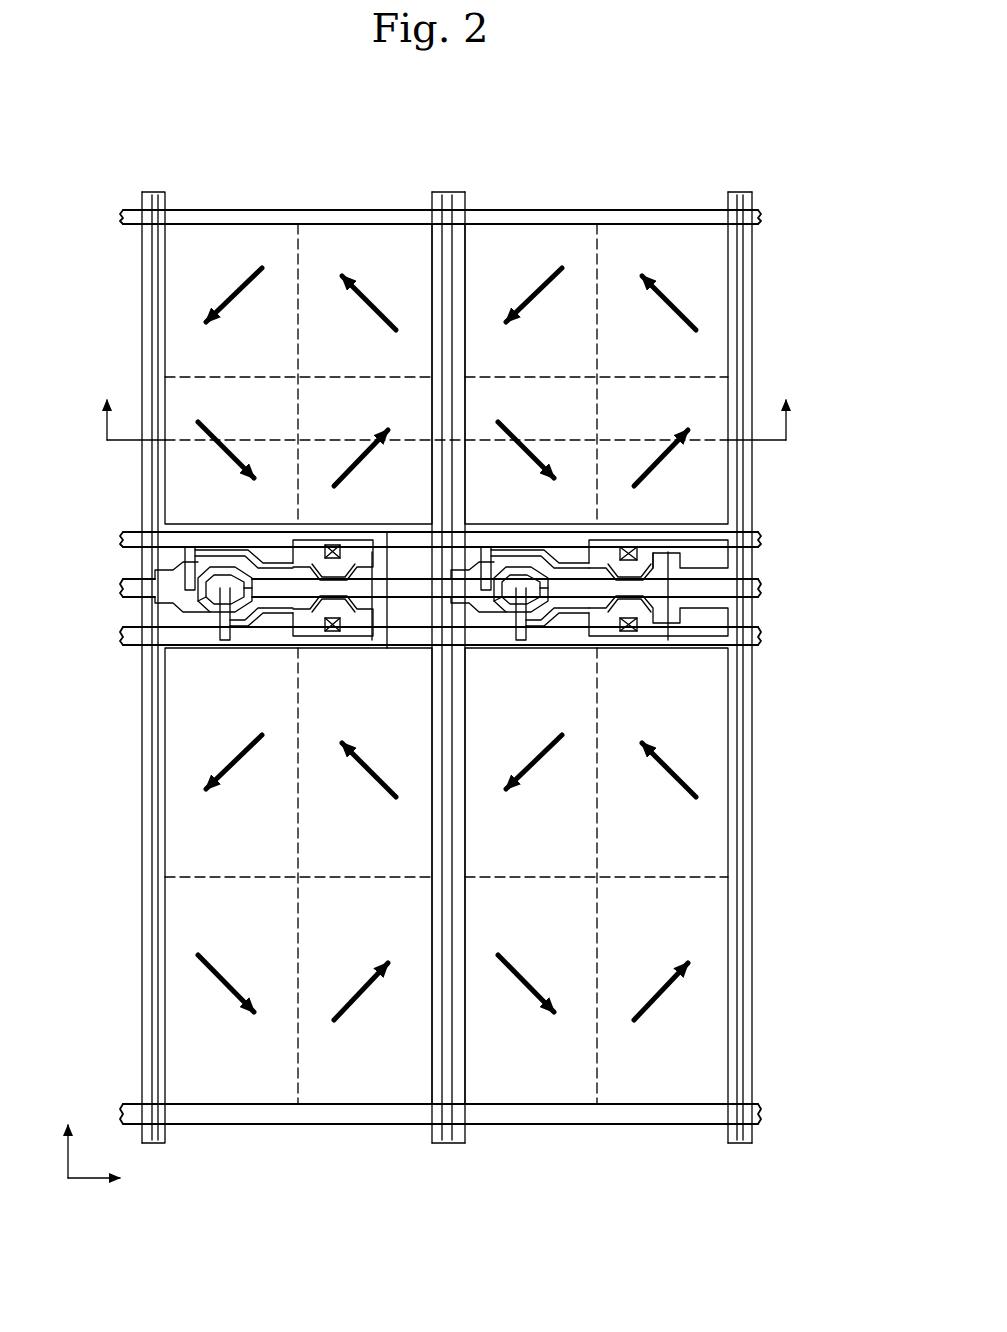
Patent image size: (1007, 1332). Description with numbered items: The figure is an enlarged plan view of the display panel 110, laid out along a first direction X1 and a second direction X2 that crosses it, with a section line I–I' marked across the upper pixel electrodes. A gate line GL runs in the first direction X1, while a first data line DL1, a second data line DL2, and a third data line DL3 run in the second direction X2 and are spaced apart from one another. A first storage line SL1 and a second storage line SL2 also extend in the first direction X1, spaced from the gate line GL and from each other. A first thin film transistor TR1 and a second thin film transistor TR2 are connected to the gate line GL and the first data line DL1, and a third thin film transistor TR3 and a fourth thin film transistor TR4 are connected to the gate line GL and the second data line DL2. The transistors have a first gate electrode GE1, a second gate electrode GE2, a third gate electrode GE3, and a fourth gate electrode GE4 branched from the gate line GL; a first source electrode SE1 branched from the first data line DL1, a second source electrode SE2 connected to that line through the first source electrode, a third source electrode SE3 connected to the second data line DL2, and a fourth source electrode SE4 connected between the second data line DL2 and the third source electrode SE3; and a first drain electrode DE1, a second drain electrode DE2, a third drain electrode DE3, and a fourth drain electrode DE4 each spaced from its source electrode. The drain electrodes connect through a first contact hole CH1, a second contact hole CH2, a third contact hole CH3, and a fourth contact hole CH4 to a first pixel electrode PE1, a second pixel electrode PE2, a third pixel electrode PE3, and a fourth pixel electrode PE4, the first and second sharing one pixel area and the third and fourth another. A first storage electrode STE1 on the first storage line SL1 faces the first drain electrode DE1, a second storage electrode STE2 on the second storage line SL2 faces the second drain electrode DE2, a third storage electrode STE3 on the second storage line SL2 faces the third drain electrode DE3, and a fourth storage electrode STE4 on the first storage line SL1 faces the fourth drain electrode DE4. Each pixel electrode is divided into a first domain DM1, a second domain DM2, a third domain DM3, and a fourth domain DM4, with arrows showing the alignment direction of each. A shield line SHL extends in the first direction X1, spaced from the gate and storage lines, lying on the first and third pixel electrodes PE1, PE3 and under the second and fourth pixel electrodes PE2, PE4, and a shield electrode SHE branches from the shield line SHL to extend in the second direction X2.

The display panel 110 is at (664, 144).
The first data line DL1 is at (150, 194).
The second data line DL2 is at (450, 194).
The third data line DL3 is at (747, 194).
The shield line SHL is at (758, 216).
The shield electrode SHE is at (737, 781).
The first pixel electrode PE1 is at (185, 293).
The second pixel electrode PE2 is at (185, 830).
The third pixel electrode PE3 is at (705, 295).
The fourth pixel electrode PE4 is at (705, 853).
The first domain DM1 is at (500, 576).
The second domain DM2 is at (396, 572).
The third domain DM3 is at (392, 694).
The fourth domain DM4 is at (496, 698).
The section line I is at (416, 401).
The section line I' is at (761, 401).
The first storage line SL1 is at (758, 540).
The second storage line SL2 is at (758, 636).
The gate line GL is at (758, 588).
The first thin film transistor TR1 is at (52, 548).
The second thin film transistor TR2 is at (295, 700).
The third thin film transistor TR3 is at (590, 490).
The fourth thin film transistor TR4 is at (595, 700).
The first gate electrode GE1 is at (176, 564).
The second gate electrode GE2 is at (202, 642).
The third gate electrode GE3 is at (470, 565).
The fourth gate electrode GE4 is at (498, 642).
The first drain electrode DE1 is at (157, 580).
The second drain electrode DE2 is at (240, 642).
The third drain electrode DE3 is at (488, 580).
The fourth drain electrode DE4 is at (545, 642).
The first source electrode SE1 is at (157, 598).
The second source electrode SE2 is at (270, 642).
The third source electrode SE3 is at (540, 560).
The fourth source electrode SE4 is at (518, 642).
The first storage electrode STE1 is at (390, 540).
The second storage electrode STE2 is at (392, 645).
The third storage electrode STE3 is at (730, 620).
The fourth storage electrode STE4 is at (730, 560).
The first contact hole CH1 is at (333, 544).
The second contact hole CH2 is at (333, 632).
The third contact hole CH3 is at (629, 632).
The fourth contact hole CH4 is at (630, 546).
The first direction X1 is at (114, 1178).
The second direction X2 is at (67, 1132).